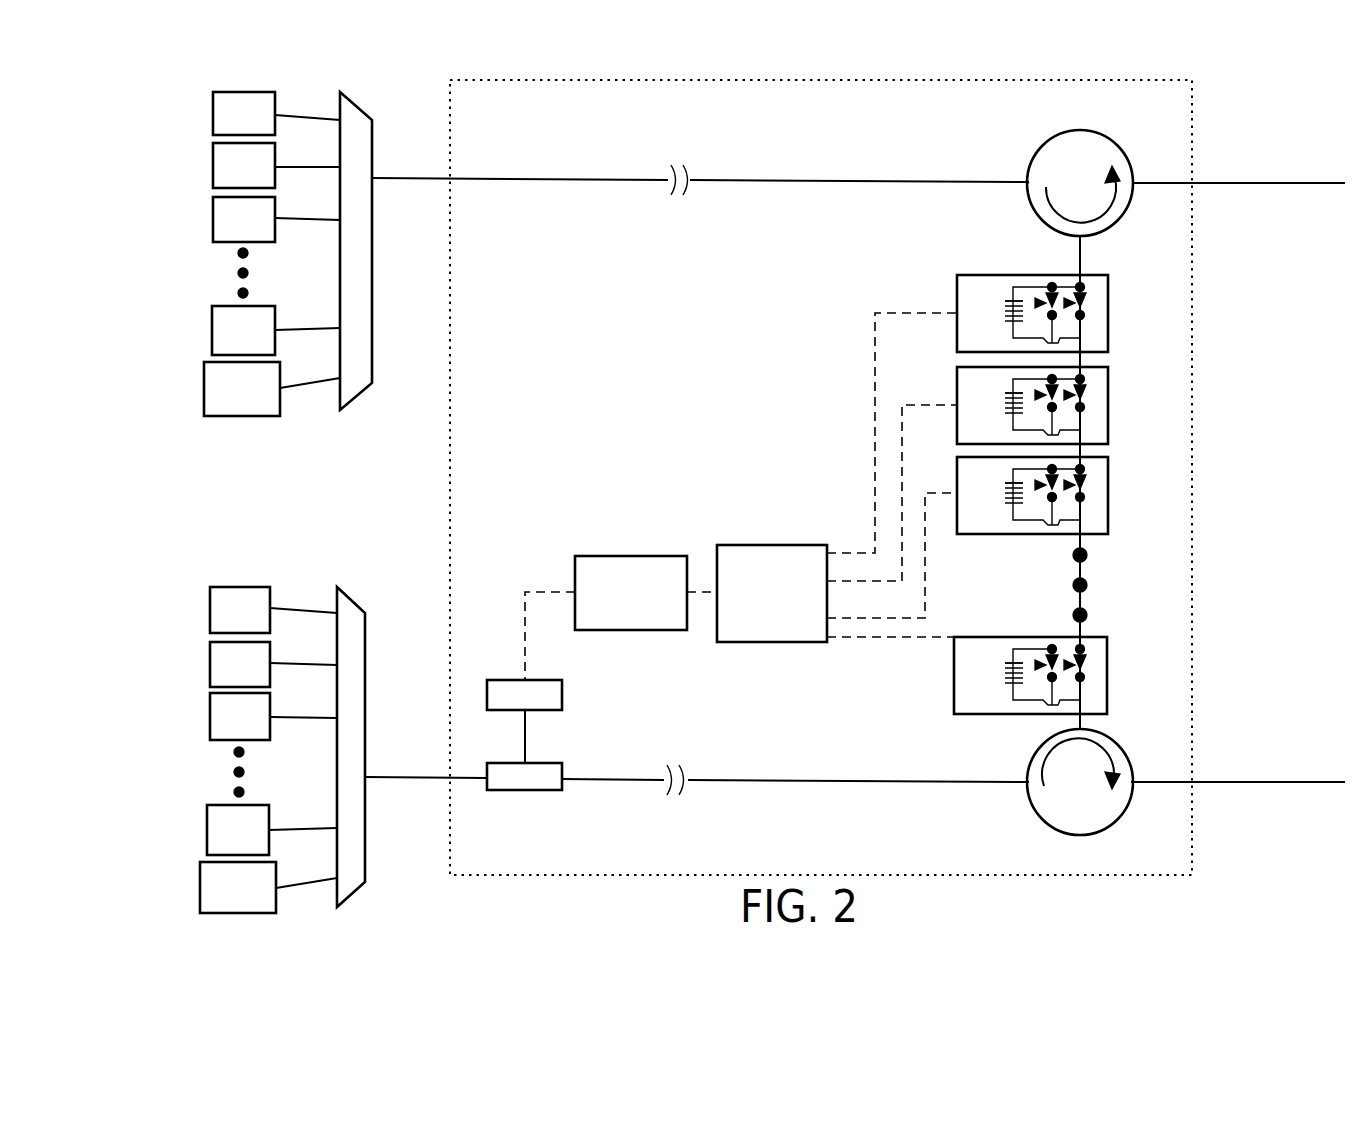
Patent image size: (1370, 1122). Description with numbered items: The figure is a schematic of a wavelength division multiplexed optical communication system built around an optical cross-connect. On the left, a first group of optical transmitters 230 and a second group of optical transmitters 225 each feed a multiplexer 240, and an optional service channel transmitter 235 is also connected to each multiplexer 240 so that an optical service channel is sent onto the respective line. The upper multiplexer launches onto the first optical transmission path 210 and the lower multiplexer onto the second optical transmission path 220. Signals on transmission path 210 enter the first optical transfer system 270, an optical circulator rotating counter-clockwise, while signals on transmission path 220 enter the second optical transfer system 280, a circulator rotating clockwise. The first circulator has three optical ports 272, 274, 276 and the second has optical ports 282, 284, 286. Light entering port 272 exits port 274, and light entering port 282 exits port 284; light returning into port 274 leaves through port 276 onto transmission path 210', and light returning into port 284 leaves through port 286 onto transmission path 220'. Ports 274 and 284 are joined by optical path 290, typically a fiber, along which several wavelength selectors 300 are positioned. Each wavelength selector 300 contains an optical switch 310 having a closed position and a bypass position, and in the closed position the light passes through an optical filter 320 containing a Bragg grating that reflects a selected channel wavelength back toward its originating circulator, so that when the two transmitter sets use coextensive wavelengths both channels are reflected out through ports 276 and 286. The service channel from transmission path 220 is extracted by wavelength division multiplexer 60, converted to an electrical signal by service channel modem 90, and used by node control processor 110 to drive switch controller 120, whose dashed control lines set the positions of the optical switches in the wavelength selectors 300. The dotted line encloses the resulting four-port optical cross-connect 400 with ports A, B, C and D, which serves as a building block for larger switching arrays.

The wavelength division multiplexer 60 is at (537, 763).
The service channel modem 90 is at (537, 680).
The node control processor 110 is at (662, 556).
The switch controller 120 is at (775, 553).
The first optical transmission path 210 is at (700, 152).
The optical transmission path 210' is at (1239, 144).
The second optical transmission path 220 is at (696, 750).
The optical transmission path 220' is at (1239, 749).
The optical transmitters 225 is at (265, 598).
The optical transmitters 230 is at (268, 103).
The service channel transmitter 235 is at (270, 366).
The multiplexer 240 is at (357, 165).
The first optical transfer system 270 is at (1107, 138).
The optical port 272 is at (1030, 195).
The optical port 274 is at (1085, 238).
The optical port 276 is at (1135, 182).
The second optical transfer system 280 is at (1078, 826).
The optical port 282 is at (1025, 790).
The optical port 284 is at (1085, 725).
The optical port 286 is at (1132, 778).
The optical path 290 is at (1083, 633).
The wavelength selector 300 is at (1108, 350).
The optical switch 310 is at (1088, 301).
The optical filter 320 is at (996, 326).
The four-port optical cross-connect 400 is at (788, 78).